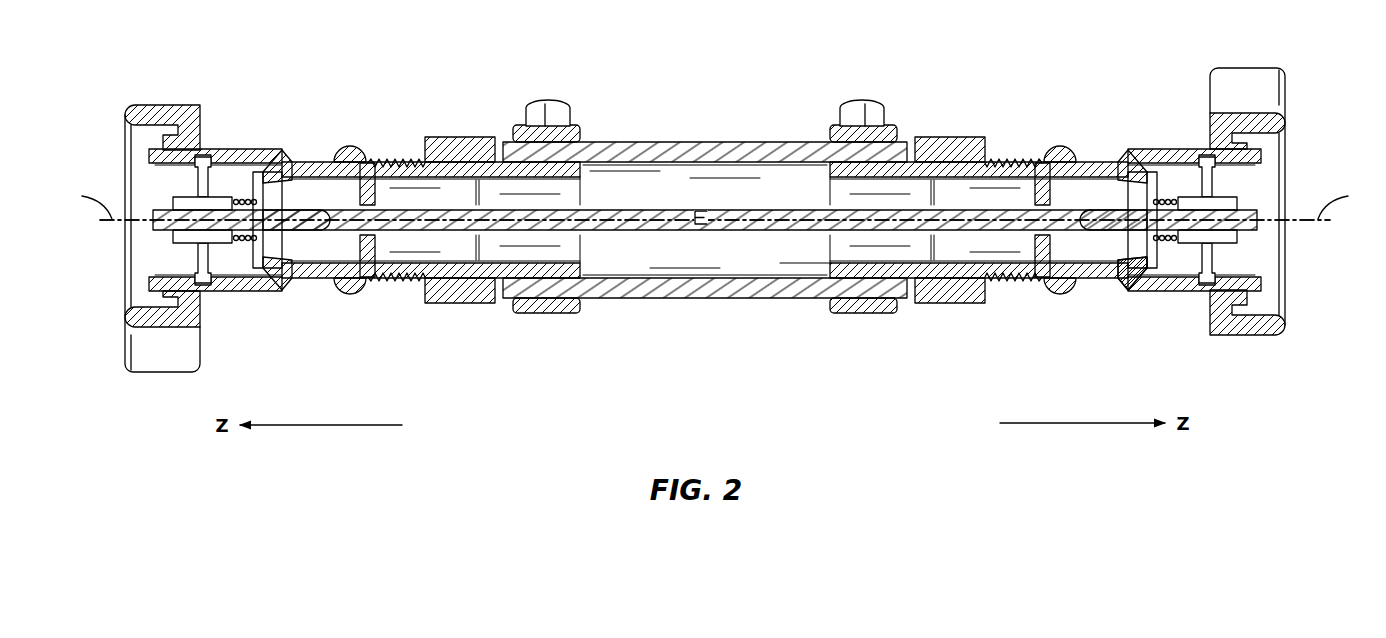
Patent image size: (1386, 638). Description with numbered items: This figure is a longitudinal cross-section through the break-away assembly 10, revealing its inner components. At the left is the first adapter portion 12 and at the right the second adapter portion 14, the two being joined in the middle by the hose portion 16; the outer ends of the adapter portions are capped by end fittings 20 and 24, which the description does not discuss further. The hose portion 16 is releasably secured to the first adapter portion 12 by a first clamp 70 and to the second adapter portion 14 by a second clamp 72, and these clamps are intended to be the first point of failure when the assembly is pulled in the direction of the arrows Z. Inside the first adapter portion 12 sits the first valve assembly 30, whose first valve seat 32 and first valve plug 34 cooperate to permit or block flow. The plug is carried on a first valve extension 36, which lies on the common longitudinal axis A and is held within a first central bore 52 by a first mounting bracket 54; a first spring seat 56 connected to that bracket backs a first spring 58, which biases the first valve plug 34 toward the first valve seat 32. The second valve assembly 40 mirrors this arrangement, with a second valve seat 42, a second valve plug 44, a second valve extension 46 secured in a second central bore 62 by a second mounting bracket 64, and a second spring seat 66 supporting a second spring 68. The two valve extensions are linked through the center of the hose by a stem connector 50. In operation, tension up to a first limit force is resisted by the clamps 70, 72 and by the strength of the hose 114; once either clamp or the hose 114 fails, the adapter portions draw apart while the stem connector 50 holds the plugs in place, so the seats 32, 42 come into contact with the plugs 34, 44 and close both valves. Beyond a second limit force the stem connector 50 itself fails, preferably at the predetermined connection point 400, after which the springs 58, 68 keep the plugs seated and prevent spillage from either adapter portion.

The break-away assembly 10 is at (714, 240).
The first adapter portion 12 is at (335, 216).
The second adapter portion 14 is at (1081, 215).
The hose portion 16 is at (715, 207).
The first end cap 20 is at (147, 150).
The second end cap 24 is at (1270, 150).
The first valve assembly 30 is at (230, 183).
The first valve seat 32 is at (293, 168).
The first valve plug 34 is at (279, 183).
The first valve extension 36 is at (187, 228).
The second valve assembly 40 is at (1128, 140).
The second valve seat 42 is at (1119, 250).
The second valve plug 44 is at (1148, 262).
The second valve extension 46 is at (1242, 225).
The stem connector 50 is at (931, 188).
The first central bore 52 is at (183, 168).
The first mounting bracket 54 is at (216, 180).
The first spring seat 56 is at (227, 245).
The first spring 58 is at (238, 242).
The second central bore 62 is at (1187, 262).
The second mounting bracket 64 is at (1195, 177).
The second spring seat 66 is at (1232, 193).
The second spring 68 is at (1169, 198).
The first clamp 70 is at (515, 132).
The second clamp 72 is at (899, 135).
The hose 114 is at (757, 286).
The connection point 400 is at (694, 222).